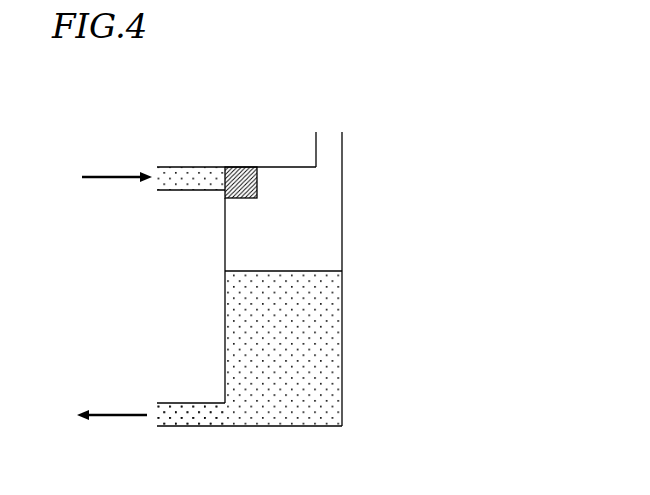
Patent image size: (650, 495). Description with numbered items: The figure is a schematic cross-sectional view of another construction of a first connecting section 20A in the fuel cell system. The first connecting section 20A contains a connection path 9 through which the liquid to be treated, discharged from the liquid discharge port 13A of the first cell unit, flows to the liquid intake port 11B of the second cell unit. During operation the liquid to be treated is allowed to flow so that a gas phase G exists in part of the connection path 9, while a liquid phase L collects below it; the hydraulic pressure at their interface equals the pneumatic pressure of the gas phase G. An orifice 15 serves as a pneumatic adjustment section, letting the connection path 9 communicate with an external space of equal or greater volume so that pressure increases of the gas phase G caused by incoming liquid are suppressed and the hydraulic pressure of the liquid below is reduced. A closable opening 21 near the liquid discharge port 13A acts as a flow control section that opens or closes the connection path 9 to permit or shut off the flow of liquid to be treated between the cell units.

The first connecting section 20A is at (401, 130).
The liquid discharge port 13A is at (197, 178).
The closable opening 21 is at (245, 178).
The orifice 15 is at (322, 138).
The connection path 9 is at (278, 257).
The gas phase G is at (325, 228).
The liquid phase L is at (303, 371).
The liquid intake port 11B is at (187, 412).